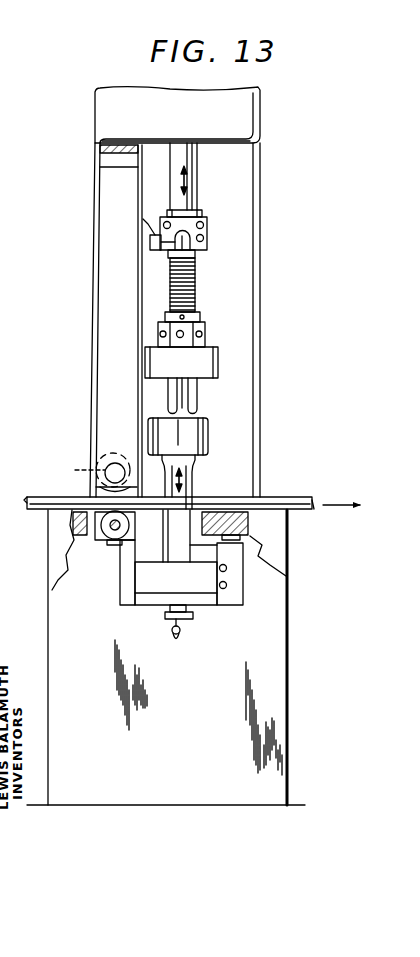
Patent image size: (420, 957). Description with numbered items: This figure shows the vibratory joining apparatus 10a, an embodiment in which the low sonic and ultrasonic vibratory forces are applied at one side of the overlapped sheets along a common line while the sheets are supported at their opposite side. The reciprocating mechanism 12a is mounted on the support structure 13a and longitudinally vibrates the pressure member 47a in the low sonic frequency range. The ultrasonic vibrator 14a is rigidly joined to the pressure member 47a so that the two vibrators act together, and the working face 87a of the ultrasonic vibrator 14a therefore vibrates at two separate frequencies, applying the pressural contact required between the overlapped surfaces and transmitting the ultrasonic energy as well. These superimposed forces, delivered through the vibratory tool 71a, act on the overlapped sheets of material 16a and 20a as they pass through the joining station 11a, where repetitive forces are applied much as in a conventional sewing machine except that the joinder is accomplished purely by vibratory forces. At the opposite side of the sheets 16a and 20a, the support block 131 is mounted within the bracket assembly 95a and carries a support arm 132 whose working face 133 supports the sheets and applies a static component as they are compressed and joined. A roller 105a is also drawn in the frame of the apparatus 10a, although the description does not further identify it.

The vibratory joining apparatus 10a is at (92, 141).
The reciprocating mechanism 12a is at (263, 133).
The pressure member 47a is at (199, 193).
The ultrasonic vibrator 14a is at (197, 292).
The vibratory tool 71a is at (207, 419).
The joining station 11a is at (186, 496).
The working face 87a is at (193, 498).
The sheet of material 16a is at (313, 499).
The sheet of material 20a is at (313, 511).
The roller 105a is at (108, 463).
The support structure 13a is at (322, 705).
The working face 133 is at (168, 508).
The bracket assembly 95a is at (119, 596).
The support arm 132 is at (183, 545).
The support block 131 is at (143, 605).